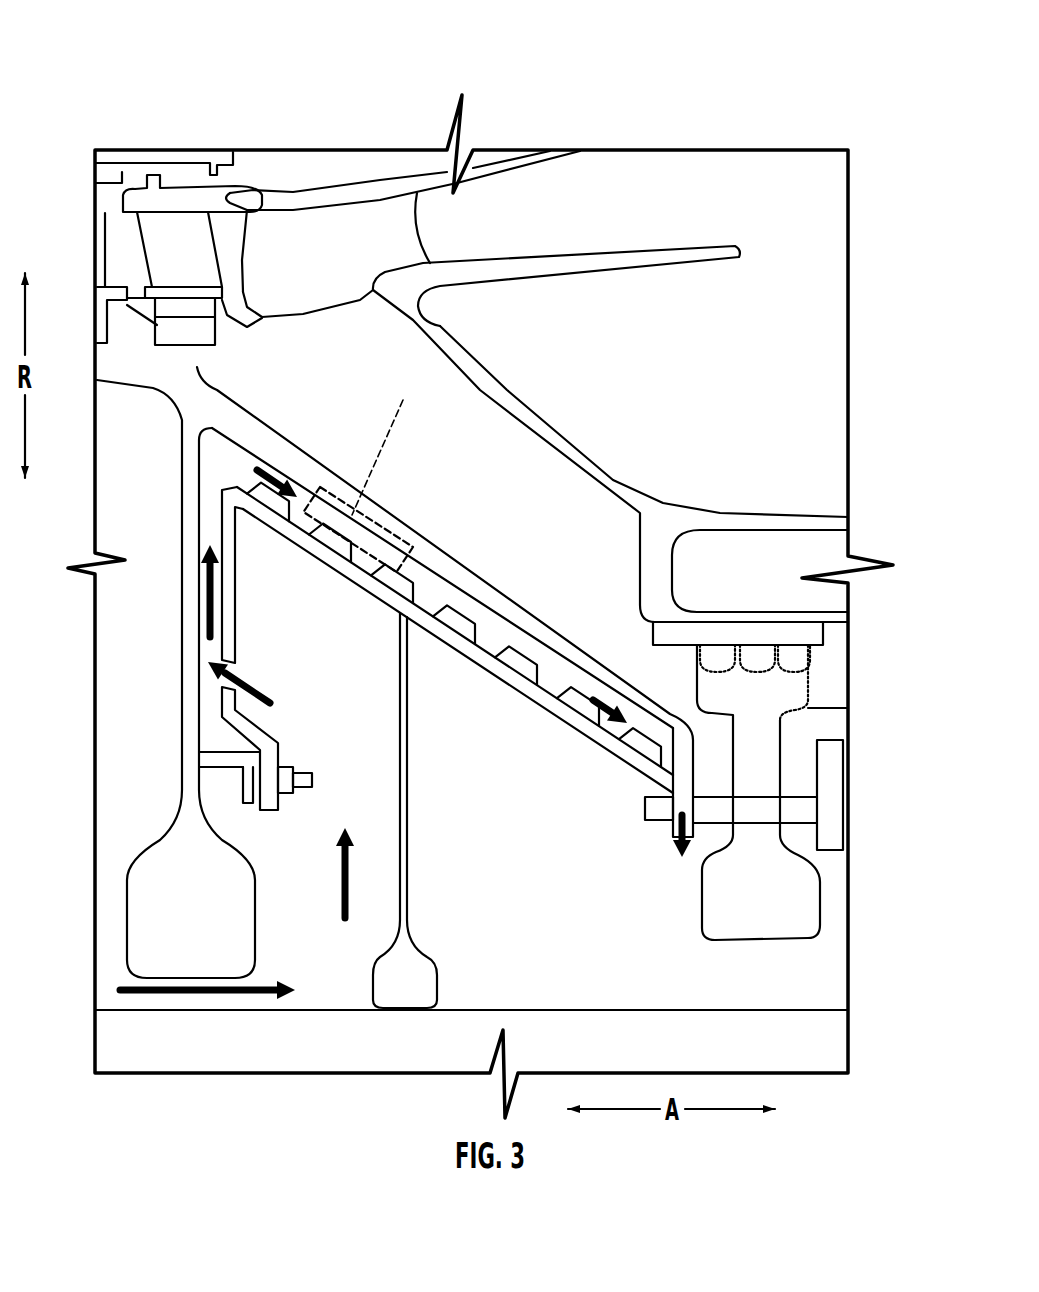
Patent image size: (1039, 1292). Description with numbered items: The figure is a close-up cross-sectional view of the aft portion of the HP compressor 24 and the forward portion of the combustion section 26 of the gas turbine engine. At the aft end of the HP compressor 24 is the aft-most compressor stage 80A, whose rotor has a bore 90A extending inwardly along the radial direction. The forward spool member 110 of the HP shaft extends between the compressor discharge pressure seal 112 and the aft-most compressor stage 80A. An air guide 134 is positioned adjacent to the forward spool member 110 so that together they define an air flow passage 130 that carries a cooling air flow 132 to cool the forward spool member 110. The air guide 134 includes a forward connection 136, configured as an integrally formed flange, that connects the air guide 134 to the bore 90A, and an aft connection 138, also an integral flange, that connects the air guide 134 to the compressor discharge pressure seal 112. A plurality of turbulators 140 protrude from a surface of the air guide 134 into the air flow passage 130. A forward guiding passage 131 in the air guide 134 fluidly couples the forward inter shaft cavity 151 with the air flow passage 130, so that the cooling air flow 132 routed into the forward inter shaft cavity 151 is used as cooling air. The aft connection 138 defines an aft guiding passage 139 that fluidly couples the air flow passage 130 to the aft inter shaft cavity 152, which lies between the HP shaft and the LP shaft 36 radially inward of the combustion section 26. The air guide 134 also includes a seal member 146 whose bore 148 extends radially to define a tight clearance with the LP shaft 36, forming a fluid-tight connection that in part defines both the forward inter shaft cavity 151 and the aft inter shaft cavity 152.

The HP compressor 24 is at (127, 117).
The combustion section 26 is at (711, 161).
The LP shaft 36 is at (813, 1008).
The aft-most compressor stage 80A is at (175, 230).
The bore 90A is at (182, 533).
The forward spool member 110 is at (323, 470).
The compressor discharge pressure seal 112 is at (840, 663).
The air flow passage 130 is at (425, 568).
The forward guiding passage 131 is at (250, 650).
The cooling air flow 132 is at (210, 598).
The air guide 134 is at (458, 651).
The forward connection 136 is at (312, 762).
The aft connection 138 is at (670, 828).
The aft guiding passage 139 is at (663, 873).
The turbulators 140 is at (457, 620).
The seal member 146 is at (422, 785).
The bore 148 is at (427, 943).
The forward inter shaft cavity 151 is at (318, 912).
The aft inter shaft cavity 152 is at (600, 960).